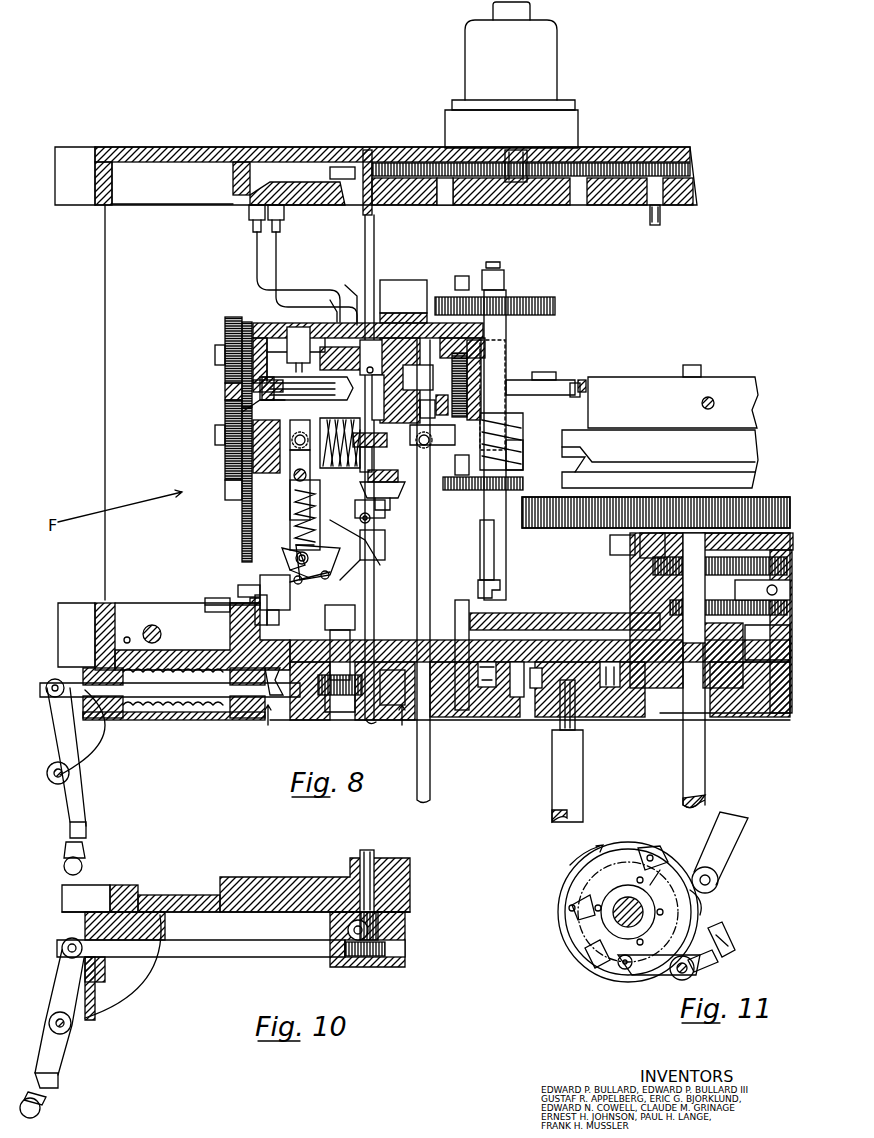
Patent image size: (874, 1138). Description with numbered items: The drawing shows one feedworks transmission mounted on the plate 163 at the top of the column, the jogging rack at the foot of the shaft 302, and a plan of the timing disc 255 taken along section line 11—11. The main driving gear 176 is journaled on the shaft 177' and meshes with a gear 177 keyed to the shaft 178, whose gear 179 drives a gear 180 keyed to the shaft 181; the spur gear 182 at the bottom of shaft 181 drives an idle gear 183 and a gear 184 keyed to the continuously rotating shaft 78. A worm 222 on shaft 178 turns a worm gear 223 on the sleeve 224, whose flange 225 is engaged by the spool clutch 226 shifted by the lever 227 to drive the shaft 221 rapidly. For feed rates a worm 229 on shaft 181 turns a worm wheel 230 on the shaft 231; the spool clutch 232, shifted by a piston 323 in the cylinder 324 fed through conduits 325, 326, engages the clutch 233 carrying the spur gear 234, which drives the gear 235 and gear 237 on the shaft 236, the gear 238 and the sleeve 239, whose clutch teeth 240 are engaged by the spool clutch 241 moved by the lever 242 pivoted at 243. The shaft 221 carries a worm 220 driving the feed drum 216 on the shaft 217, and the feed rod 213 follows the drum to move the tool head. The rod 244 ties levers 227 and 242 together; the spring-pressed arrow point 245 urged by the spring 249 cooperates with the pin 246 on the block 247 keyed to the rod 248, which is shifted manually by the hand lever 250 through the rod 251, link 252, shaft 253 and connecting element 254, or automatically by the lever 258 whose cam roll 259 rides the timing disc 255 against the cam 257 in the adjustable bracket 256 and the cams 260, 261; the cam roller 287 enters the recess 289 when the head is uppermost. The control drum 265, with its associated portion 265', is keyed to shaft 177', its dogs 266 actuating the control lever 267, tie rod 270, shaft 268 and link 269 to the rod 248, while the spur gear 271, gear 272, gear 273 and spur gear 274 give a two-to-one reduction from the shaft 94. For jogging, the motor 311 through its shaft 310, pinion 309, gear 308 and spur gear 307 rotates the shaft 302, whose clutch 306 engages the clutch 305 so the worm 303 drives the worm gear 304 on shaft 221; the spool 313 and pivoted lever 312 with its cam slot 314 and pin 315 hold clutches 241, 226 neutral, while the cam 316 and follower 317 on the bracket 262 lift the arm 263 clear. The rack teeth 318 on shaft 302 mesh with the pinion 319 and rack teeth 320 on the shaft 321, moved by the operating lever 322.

In FIG. 8, the motor 311 is at (545, 73).
In FIG. 8, the shaft 310 is at (515, 150).
In FIG. 8, the spur gear 307 is at (330, 173).
In FIG. 8, the gear 308 is at (445, 205).
In FIG. 8, the pinion 309 is at (505, 176).
In FIG. 8, the shaft 302 is at (363, 250).
In FIG. 10, the shaft 302 is at (360, 850).
In FIG. 8, the conduit 326 is at (255, 262).
In FIG. 8, the conduit 325 is at (278, 262).
In FIG. 8, the cylinder 324 is at (347, 296).
In FIG. 8, the shaft 181 is at (462, 276).
In FIG. 8, the shaft 178 is at (493, 262).
In FIG. 8, the gear 180 is at (438, 290).
In FIG. 8, the gear 179 is at (555, 305).
In FIG. 8, the gear 237 is at (225, 340).
In FIG. 8, the gear 235 is at (247, 322).
In FIG. 8, the spur gear 234 is at (225, 400).
In FIG. 8, the clutch 233 is at (242, 412).
In FIG. 8, the gear 238 is at (225, 432).
In FIG. 8, the sleeve 239 is at (242, 468).
In FIG. 8, the clutch teeth 240 is at (225, 493).
In FIG. 8, the shaft 236 is at (280, 318).
In FIG. 8, the piston 323 is at (323, 307).
In FIG. 8, the worm 303 is at (365, 375).
In FIG. 8, the clutch 305 is at (384, 397).
In FIG. 8, the clutch 306 is at (405, 382).
In FIG. 8, the spool clutch 232 is at (290, 400).
In FIG. 8, the worm 220 is at (348, 412).
In FIG. 8, the worm gear 304 is at (373, 451).
In FIG. 8, the shaft 221 is at (422, 390).
In FIG. 8, the flange 225 is at (447, 400).
In FIG. 8, the spool clutch 226 is at (425, 425).
In FIG. 8, the sleeve 224 is at (465, 460).
In FIG. 8, the worm wheel 230 is at (455, 353).
In FIG. 8, the shaft 231 is at (466, 375).
In FIG. 8, the bracket 262 is at (387, 464).
In FIG. 8, the arm 263 is at (382, 478).
In FIG. 8, the cam 316 is at (388, 495).
In FIG. 8, the follower 317 is at (355, 510).
In FIG. 8, the spool 313 is at (383, 545).
In FIG. 8, the rod 244 is at (355, 546).
In FIG. 8, the lever 227 is at (374, 570).
In FIG. 8, the pivoted lever 312 is at (330, 560).
In FIG. 8, the spool clutch 241 is at (290, 490).
In FIG. 8, the lever 242 is at (293, 505).
In FIG. 8, the pivot 243 is at (296, 530).
In FIG. 8, the spring 249 is at (296, 555).
In FIG. 8, the pin 315 is at (282, 550).
In FIG. 8, the cam slot 314 is at (290, 568).
In FIG. 8, the spring-pressed arrow point 245 is at (262, 580).
In FIG. 8, the feed drum 216 is at (260, 590).
In FIG. 8, the pin 246 is at (255, 591).
In FIG. 8, the rod 248 is at (205, 605).
In FIG. 8, the connecting element 254 is at (255, 612).
In FIG. 8, the block 247 is at (267, 618).
In FIG. 8, the plate 163 is at (212, 655).
In FIG. 10, the plate 163 is at (285, 875).
In FIG. 8, the rod 251 is at (235, 697).
In FIG. 8, the section line 11— 11 is at (334, 725).
In FIG. 8, the link 252 is at (275, 695).
In FIG. 11, the link 252 is at (717, 970).
In FIG. 8, the shaft 253 is at (340, 625).
In FIG. 11, the shaft 253 is at (688, 975).
In FIG. 8, the shaft 217 is at (340, 695).
In FIG. 11, the shaft 217 is at (600, 893).
In FIG. 8, the timing disc 255 is at (390, 705).
In FIG. 11, the timing disc 255 is at (560, 878).
In FIG. 8, the feed rod 213 is at (430, 777).
In FIG. 8, the hand lever 250 is at (85, 848).
In FIG. 11, the hand lever 250 is at (730, 945).
In FIG. 8, the control drum 265 is at (673, 389).
In FIG. 8, the bar 265' is at (660, 459).
In FIG. 8, the shaft 177' is at (663, 460).
In FIG. 8, the dog 266 is at (582, 380).
In FIG. 8, the tie rod 270 is at (545, 372).
In FIG. 8, the worm 229 is at (540, 380).
In FIG. 8, the control lever 267 is at (575, 397).
In FIG. 8, the shaft 268 is at (505, 408).
In FIG. 8, the link 269 is at (500, 593).
In FIG. 8, the worm 222 is at (523, 435).
In FIG. 8, the worm gear 223 is at (523, 460).
In FIG. 8, the gear 176 is at (570, 528).
In FIG. 8, the gear 177 is at (570, 541).
In FIG. 8, the spur gear 271 is at (660, 575).
In FIG. 8, the gear 272 is at (730, 597).
In FIG. 8, the gear 273 is at (758, 630).
In FIG. 8, the spur gear 274 is at (695, 620).
In FIG. 8, the shaft 94 is at (705, 757).
In FIG. 8, the shaft 78 is at (570, 780).
In FIG. 8, the spur gear 182 is at (485, 661).
In FIG. 8, the idle gear 183 is at (521, 666).
In FIG. 8, the gear 184 is at (590, 668).
In FIG. 10, the rack teeth 318 is at (405, 930).
In FIG. 10, the pinion 319 is at (348, 928).
In FIG. 10, the rack teeth 320 is at (345, 955).
In FIG. 10, the shaft 321 is at (252, 950).
In FIG. 10, the operating lever 322 is at (55, 1085).
In FIG. 11, the cam 257 is at (653, 848).
In FIG. 11, the adjustable bracket 256 is at (660, 868).
In FIG. 11, the cam 260 is at (575, 910).
In FIG. 11, the third cam 261 is at (588, 958).
In FIG. 11, the cam roll 259 is at (624, 969).
In FIG. 11, the lever 258 is at (655, 975).
In FIG. 11, the cam roller 287 is at (718, 885).
In FIG. 11, the recess 289 is at (700, 908).